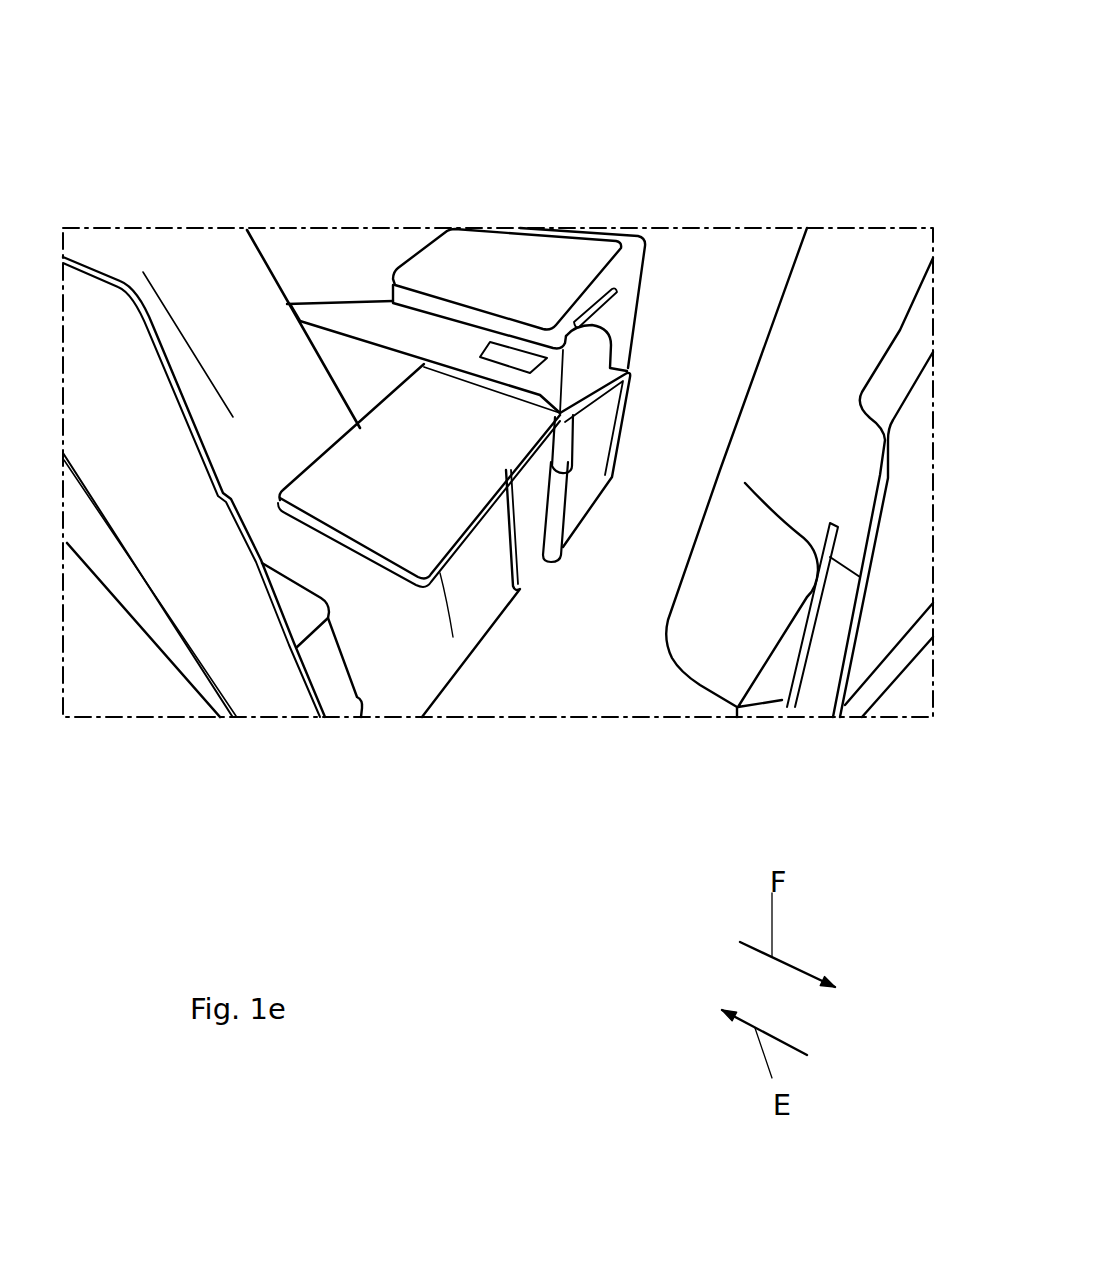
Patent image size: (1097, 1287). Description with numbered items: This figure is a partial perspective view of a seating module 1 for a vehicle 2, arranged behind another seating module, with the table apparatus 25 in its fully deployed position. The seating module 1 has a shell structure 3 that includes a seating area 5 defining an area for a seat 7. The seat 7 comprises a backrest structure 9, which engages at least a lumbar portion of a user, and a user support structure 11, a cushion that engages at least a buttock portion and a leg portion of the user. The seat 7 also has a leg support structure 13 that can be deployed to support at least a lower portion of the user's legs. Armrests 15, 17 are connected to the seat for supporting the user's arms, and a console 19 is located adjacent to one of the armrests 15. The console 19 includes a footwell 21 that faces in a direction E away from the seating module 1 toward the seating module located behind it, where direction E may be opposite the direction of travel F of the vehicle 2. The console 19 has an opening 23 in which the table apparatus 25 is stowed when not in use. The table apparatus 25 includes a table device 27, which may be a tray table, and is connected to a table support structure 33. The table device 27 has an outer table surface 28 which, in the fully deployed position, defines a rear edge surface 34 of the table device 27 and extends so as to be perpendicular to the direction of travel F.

The seating module 1 is at (172, 663).
The vehicle 2 is at (575, 697).
The shell structure 3 is at (143, 633).
The seating area 5 is at (292, 648).
The seat 7 is at (435, 667).
The backrest structure 9 is at (210, 327).
The user support structure 11 is at (367, 597).
The leg support structure 13 is at (473, 610).
The armrest 15 is at (505, 372).
The armrest 17 is at (300, 610).
The console 19 is at (632, 310).
The footwell 21 is at (772, 667).
The opening 23 is at (592, 305).
The table apparatus 25 is at (560, 413).
The table device 27 is at (472, 418).
The outer table surface 28 is at (337, 437).
The table support structure 33 is at (634, 336).
The rear edge surface 34 is at (393, 390).